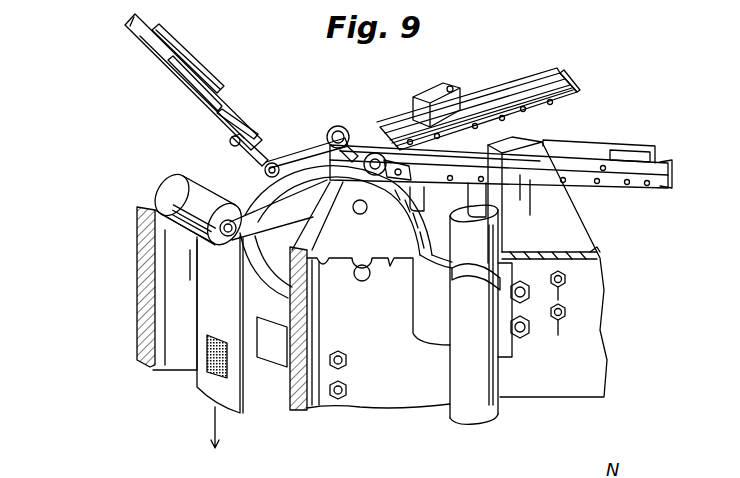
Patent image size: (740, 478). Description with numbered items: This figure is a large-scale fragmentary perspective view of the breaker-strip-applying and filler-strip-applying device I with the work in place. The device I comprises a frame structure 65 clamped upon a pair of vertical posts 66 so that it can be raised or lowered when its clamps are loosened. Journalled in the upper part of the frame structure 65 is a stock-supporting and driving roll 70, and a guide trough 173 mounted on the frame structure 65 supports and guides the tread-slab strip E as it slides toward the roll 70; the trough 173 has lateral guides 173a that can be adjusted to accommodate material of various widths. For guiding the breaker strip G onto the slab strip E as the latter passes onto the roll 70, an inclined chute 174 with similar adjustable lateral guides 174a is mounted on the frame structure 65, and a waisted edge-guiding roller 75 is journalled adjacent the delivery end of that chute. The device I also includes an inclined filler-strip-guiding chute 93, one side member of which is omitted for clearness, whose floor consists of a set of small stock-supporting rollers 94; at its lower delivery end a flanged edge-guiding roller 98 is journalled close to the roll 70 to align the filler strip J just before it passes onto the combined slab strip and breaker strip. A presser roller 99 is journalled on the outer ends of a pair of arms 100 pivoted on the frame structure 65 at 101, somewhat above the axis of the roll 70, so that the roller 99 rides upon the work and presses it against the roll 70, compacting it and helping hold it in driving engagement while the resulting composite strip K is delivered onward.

The inclined filler-strip-guiding chute 93 is at (143, 20).
The stock-supporting rollers 94 is at (205, 83).
The filler strip J is at (228, 98).
The flanged edge-guiding roller 98 is at (268, 153).
The waisted edge-guiding roller 75 is at (342, 126).
The presser roller 99 is at (170, 182).
The arms 100 is at (270, 218).
The composite strip K is at (212, 262).
The stock-supporting and driving roll 70 is at (267, 290).
The pivot of arms 101 is at (360, 214).
The frame structure 65 is at (370, 328).
The vertical posts 66 is at (467, 383).
The breaker-strip-applying and filler-strip-applying device I is at (550, 394).
The inclined chute 174 is at (530, 80).
The lateral guides 174a is at (480, 93).
The breaker strip G is at (497, 107).
The guide trough 173 is at (593, 133).
The lateral guides 173a is at (580, 128).
The tread-slab strip E is at (627, 157).